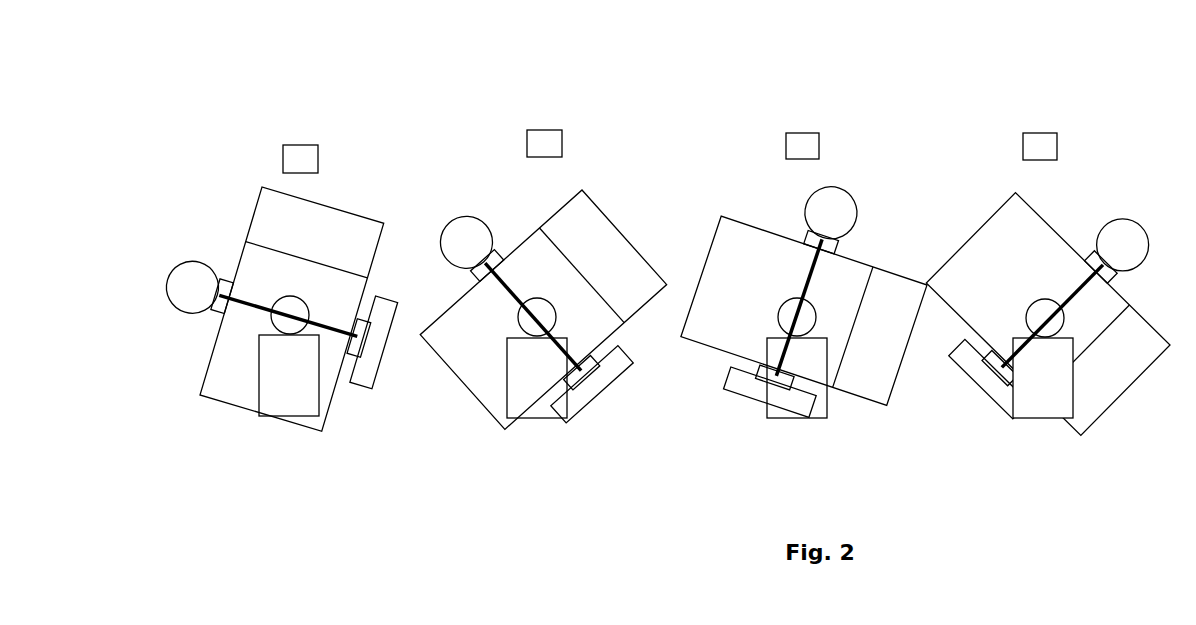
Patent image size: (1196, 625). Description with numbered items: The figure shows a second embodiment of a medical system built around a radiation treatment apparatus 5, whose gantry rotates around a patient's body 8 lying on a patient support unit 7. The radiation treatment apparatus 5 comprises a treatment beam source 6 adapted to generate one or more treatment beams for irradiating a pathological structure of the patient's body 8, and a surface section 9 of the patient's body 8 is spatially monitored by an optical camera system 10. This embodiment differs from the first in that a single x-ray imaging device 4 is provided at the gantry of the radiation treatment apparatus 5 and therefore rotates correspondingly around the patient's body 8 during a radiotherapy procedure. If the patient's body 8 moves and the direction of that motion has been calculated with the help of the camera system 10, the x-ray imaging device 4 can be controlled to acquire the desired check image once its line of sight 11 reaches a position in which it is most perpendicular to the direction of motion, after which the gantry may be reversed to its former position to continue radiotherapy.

The x-ray imaging device 4 is at (385, 286).
The radiation treatment apparatus 5 is at (273, 248).
The treatment beam source 6 is at (313, 225).
The patient support unit 7 is at (267, 410).
The patient's body 8 is at (237, 359).
The surface section 9 is at (335, 399).
The optical camera system 10 is at (313, 97).
The line of sight 11 is at (286, 250).